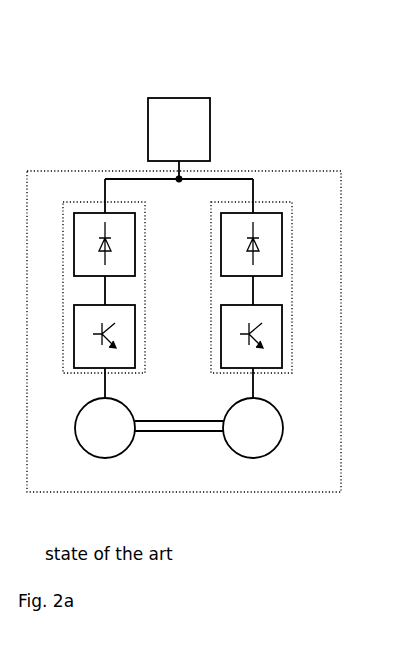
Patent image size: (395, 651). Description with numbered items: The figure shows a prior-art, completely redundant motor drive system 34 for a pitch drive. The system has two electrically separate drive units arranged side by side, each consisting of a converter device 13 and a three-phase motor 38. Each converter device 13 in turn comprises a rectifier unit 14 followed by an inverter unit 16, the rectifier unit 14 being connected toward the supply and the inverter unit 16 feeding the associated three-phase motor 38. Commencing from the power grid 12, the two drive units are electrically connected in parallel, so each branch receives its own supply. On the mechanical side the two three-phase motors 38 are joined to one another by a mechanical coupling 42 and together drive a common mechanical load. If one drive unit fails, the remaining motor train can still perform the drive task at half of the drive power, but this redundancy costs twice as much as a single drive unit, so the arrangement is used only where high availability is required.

The power grid 12 is at (148, 130).
The converter device 13 is at (63, 242).
The rectifier unit 14 is at (135, 243).
The inverter unit 16 is at (135, 333).
The completely redundant motor drive system 34 is at (250, 108).
The three-phase motor 38 is at (132, 444).
The mechanical coupling 42 is at (170, 421).